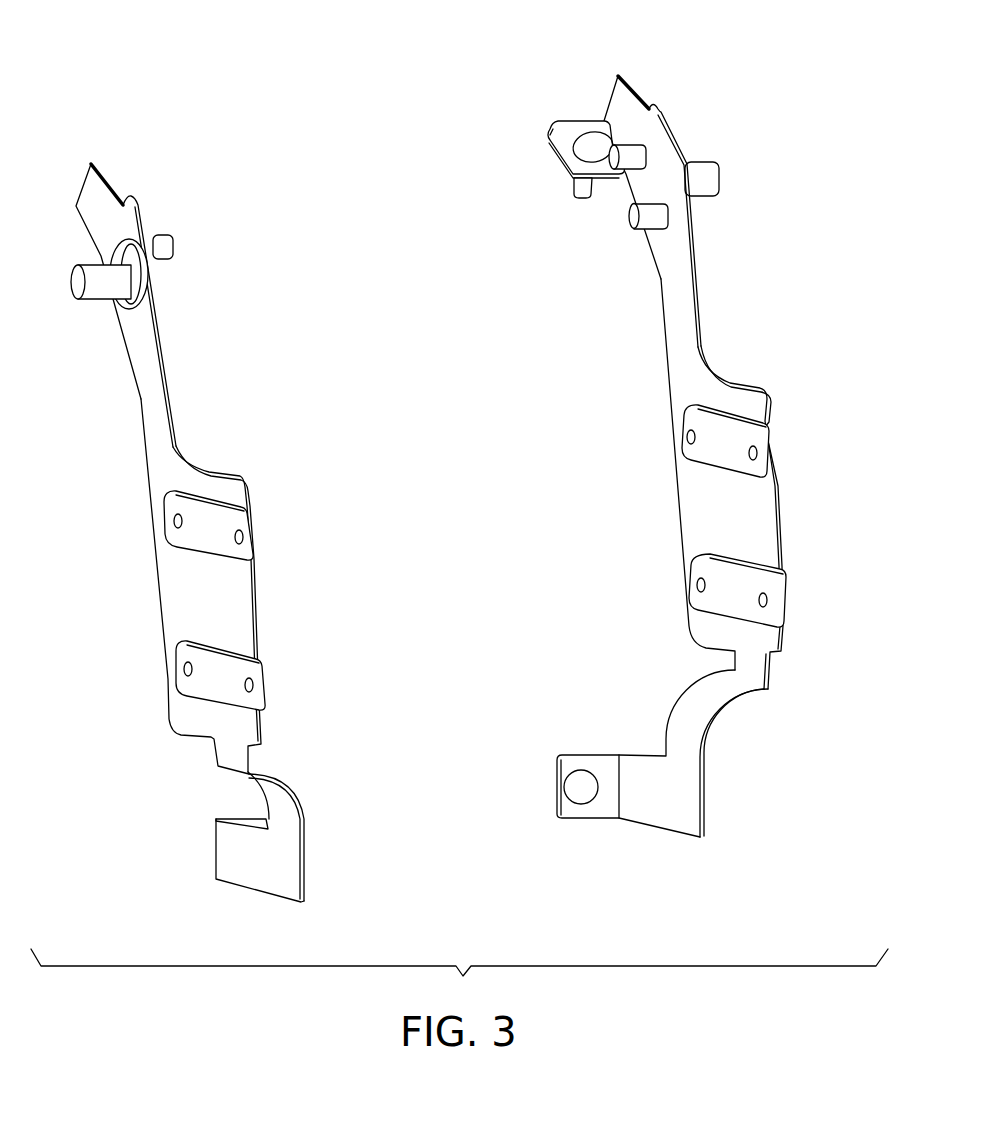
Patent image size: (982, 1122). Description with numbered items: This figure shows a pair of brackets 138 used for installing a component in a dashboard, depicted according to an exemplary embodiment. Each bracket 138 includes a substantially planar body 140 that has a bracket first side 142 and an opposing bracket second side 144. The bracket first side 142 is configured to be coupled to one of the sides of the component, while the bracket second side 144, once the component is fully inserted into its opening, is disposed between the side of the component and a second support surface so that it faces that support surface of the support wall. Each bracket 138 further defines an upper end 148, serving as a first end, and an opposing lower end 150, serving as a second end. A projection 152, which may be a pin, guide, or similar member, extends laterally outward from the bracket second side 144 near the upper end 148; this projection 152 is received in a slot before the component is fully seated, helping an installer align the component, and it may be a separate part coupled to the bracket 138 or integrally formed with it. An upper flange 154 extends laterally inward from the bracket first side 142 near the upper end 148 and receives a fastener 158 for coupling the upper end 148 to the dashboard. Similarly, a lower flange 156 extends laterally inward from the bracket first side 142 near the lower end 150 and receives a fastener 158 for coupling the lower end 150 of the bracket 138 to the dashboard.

The bracket 138 is at (228, 236).
The planar body 140 is at (166, 348).
The bracket first side 142 is at (256, 609).
The bracket second side 144 is at (156, 428).
The upper end 148 is at (92, 202).
The lower end 150 is at (276, 853).
The projection 152 is at (86, 296).
The upper flange 154 is at (556, 132).
The lower flange 156 is at (590, 806).
The fastener 158 is at (580, 199).